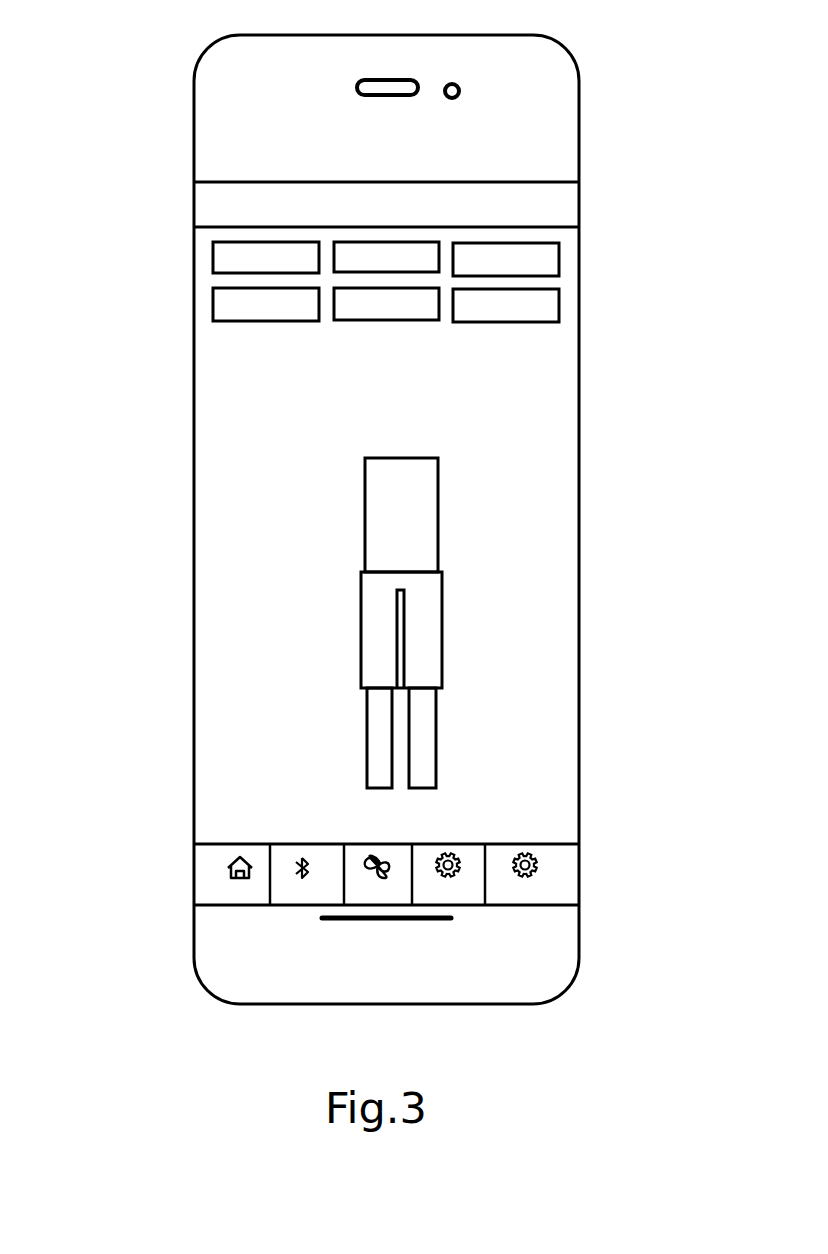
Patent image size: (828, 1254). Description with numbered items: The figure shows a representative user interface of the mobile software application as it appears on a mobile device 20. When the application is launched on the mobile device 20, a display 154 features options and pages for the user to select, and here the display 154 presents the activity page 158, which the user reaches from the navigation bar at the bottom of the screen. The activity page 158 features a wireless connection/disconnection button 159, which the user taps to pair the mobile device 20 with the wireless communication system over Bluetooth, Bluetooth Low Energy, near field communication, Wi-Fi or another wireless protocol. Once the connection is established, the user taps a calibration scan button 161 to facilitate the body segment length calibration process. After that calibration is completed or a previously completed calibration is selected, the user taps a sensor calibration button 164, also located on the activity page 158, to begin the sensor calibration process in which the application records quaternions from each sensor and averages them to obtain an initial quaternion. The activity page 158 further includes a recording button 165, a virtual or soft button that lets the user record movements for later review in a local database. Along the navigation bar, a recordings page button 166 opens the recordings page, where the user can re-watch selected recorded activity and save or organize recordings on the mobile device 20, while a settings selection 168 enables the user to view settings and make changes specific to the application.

The mobile device 20 is at (515, 133).
The calibration scan button 161 is at (222, 255).
The sensor calibration button 164 is at (348, 267).
The wireless connection/disconnection button 159 is at (551, 257).
The recording button 165 is at (551, 306).
The display 154 is at (532, 458).
The activity page 158 is at (520, 585).
The settings selection 168 is at (430, 855).
The recordings page button 166 is at (553, 864).